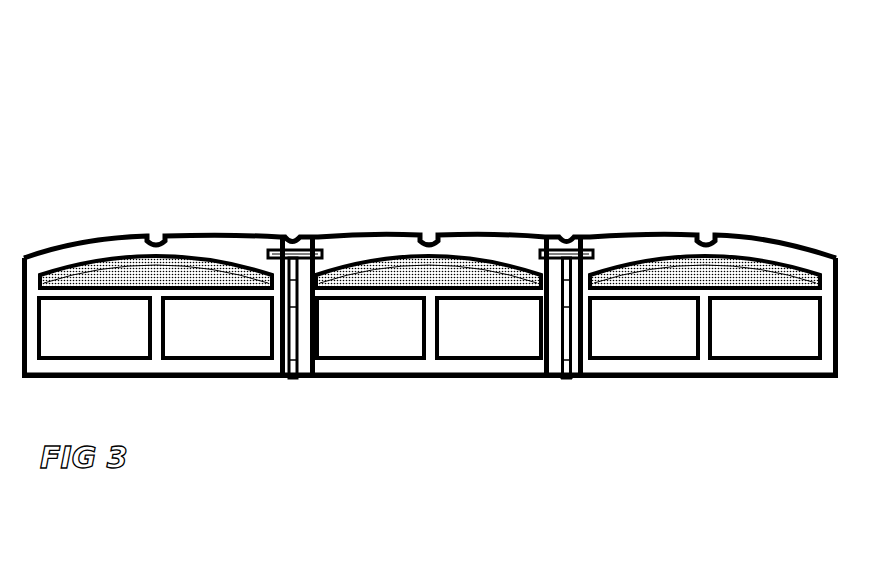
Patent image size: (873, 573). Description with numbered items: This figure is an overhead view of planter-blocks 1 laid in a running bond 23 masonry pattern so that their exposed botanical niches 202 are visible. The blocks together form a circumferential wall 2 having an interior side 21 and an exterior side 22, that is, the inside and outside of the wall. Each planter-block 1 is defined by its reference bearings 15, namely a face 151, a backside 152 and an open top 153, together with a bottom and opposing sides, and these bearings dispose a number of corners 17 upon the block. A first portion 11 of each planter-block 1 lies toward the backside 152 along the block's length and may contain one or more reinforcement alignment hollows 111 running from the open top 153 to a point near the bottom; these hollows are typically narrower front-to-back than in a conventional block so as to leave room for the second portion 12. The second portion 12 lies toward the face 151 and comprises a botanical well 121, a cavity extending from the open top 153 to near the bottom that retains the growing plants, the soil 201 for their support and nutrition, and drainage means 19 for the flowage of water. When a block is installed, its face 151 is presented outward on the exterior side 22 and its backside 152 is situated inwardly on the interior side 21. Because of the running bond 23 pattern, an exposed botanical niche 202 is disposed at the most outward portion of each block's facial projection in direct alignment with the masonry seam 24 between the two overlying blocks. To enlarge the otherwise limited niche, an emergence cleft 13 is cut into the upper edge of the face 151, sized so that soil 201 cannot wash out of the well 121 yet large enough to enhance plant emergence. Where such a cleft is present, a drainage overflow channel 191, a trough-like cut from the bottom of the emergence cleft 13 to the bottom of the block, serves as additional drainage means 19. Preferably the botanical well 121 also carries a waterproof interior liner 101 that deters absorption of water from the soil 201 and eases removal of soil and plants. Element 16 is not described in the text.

The planter-block 1 is at (760, 90).
The first portion 11 is at (667, 332).
The reinforcement alignment hollows 111 is at (685, 310).
The second portion 12 is at (323, 257).
The botanical well 121 is at (330, 236).
The emergence cleft 13 is at (432, 236).
The reference bearings 15 is at (525, 134).
The face 151 is at (445, 240).
The backside 152 is at (508, 243).
The open top 153 is at (482, 243).
The side housing 16 is at (290, 257).
The corners 17 is at (831, 255).
The drainage means 19 is at (427, 236).
The drainage overflow channel 191 is at (423, 236).
The waterproof interior liner 101 is at (207, 252).
The circumferential wall 2 is at (262, 485).
The interior side 21 is at (462, 377).
The exterior side 22 is at (493, 250).
The running bond 23 is at (648, 240).
The masonry seam 24 is at (596, 250).
The soil 201 is at (300, 330).
The exposed botanical niche 202 is at (324, 258).